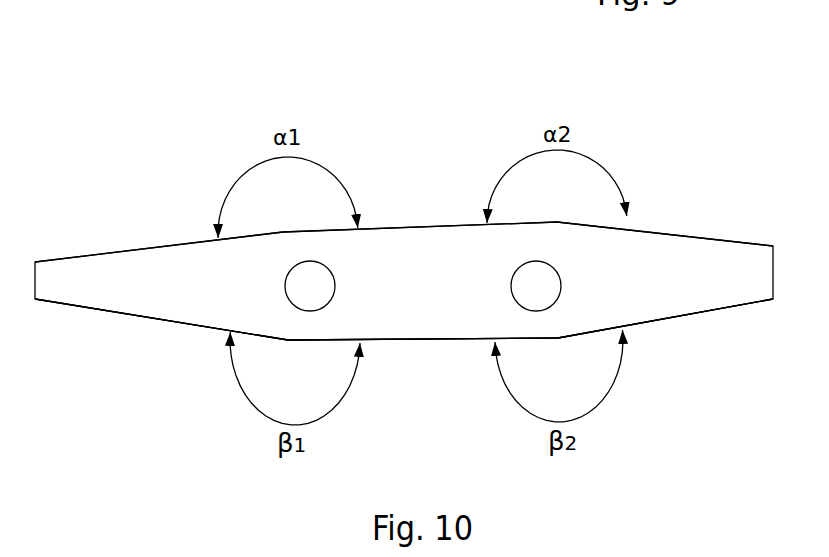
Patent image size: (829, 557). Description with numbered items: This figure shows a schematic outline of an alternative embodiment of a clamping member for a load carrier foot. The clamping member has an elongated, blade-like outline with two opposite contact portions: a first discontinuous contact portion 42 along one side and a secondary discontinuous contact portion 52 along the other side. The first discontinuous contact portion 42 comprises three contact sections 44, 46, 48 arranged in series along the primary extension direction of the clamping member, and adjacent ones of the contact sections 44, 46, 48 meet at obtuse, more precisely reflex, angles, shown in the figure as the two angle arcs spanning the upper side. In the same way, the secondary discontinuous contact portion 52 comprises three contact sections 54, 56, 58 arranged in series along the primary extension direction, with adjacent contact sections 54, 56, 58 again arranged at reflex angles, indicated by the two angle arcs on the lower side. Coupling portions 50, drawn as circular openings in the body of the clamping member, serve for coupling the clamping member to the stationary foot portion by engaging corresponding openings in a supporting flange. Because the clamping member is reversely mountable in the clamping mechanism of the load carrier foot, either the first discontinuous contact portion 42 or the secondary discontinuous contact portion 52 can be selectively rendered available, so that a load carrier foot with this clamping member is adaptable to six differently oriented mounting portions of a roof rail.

The first discontinuous contact portion 42 is at (326, 103).
The contact section 44 is at (158, 243).
The contact section 46 is at (428, 218).
The contact section 48 is at (697, 233).
The coupling portion 50 is at (315, 283).
The secondary discontinuous contact portion 52 is at (235, 435).
The contact section 54 is at (130, 322).
The contact section 56 is at (422, 343).
The contact section 58 is at (680, 320).